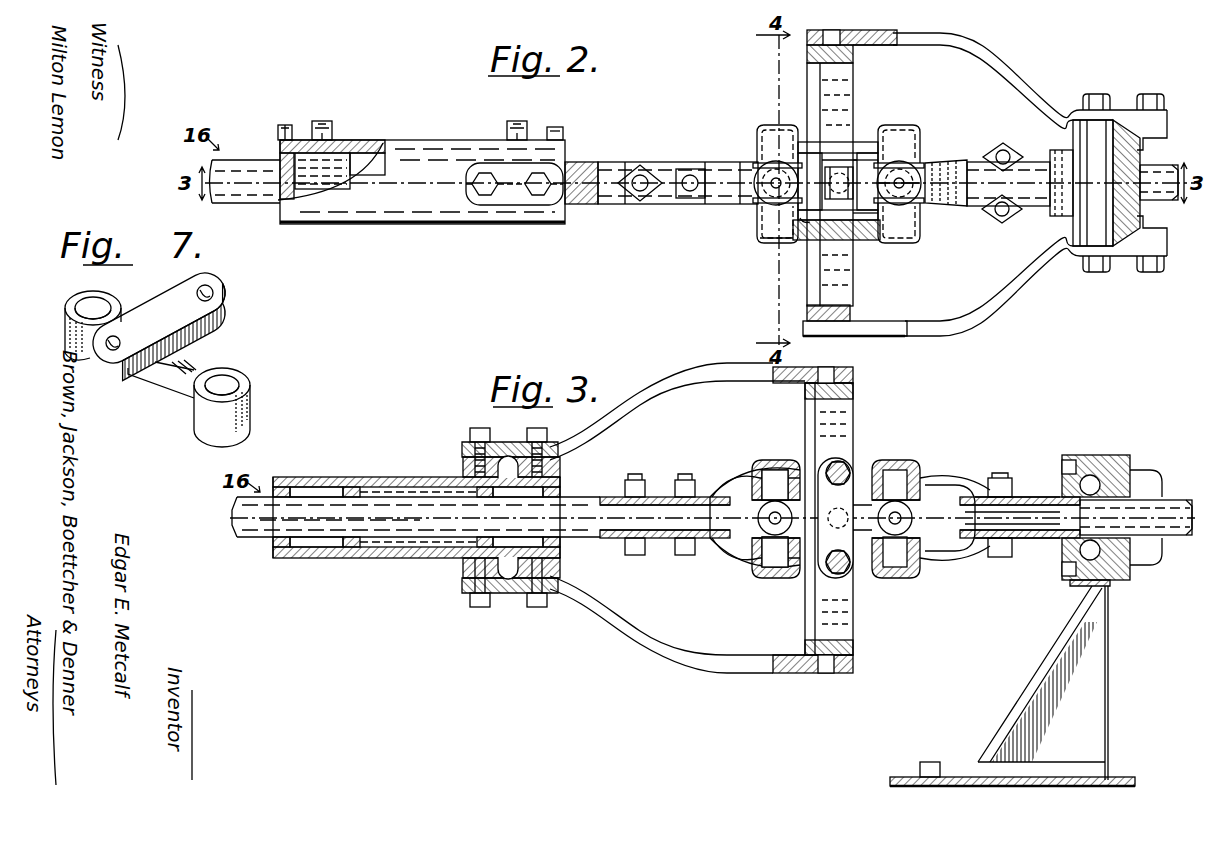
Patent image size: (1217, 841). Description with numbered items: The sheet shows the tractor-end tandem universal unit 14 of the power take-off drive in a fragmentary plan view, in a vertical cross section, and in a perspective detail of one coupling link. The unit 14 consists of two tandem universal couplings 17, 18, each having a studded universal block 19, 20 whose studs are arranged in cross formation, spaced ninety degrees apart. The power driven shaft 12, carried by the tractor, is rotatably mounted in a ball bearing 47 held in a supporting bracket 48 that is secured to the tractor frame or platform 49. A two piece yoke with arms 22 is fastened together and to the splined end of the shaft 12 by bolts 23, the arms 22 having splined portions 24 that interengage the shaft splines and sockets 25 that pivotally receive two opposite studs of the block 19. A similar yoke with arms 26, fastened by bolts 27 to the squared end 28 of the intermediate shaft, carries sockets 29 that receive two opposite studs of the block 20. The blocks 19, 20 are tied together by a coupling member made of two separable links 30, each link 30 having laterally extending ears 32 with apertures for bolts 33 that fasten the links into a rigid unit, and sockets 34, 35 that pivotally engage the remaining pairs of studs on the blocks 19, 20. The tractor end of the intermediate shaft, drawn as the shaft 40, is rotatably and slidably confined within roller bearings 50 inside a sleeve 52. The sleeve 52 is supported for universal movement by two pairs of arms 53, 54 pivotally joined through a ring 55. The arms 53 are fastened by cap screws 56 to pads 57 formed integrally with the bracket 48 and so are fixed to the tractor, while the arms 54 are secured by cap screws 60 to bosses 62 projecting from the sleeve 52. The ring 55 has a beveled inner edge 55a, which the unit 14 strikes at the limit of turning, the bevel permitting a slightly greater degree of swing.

In FIG. 2, the power driven shaft 12 is at (1158, 175).
In FIG. 3, the power driven shaft 12 is at (1155, 500).
In FIG. 2, the tandem universal unit 14 is at (866, 287).
In FIG. 3, the tandem universal unit 14 is at (866, 630).
In FIG. 2, the universal coupling 17 is at (924, 136).
In FIG. 3, the universal coupling 17 is at (922, 464).
In FIG. 2, the universal coupling 18 is at (755, 135).
In FIG. 3, the universal coupling 18 is at (758, 466).
In FIG. 2, the studded universal block 19 is at (906, 214).
In FIG. 3, the studded universal block 19 is at (945, 495).
In FIG. 2, the studded universal block 20 is at (803, 221).
In FIG. 3, the studded universal block 20 is at (760, 510).
In FIG. 2, the yoke arms 22 is at (957, 173).
In FIG. 3, the yoke arms 22 is at (963, 548).
In FIG. 2, the bolts 23 is at (1013, 160).
In FIG. 3, the bolts 23 is at (1005, 558).
In FIG. 3, the splined portions 24 is at (1013, 497).
In FIG. 2, the sockets 25 is at (905, 176).
In FIG. 3, the sockets 25 is at (900, 460).
In FIG. 2, the yoke arms 26 is at (722, 167).
In FIG. 3, the yoke arms 26 is at (722, 480).
In FIG. 2, the bolts 27 is at (647, 168).
In FIG. 3, the bolts 27 is at (660, 478).
In FIG. 2, the squared end 28 is at (682, 200).
In FIG. 3, the squared end 28 is at (680, 540).
In FIG. 2, the sockets 29 is at (758, 190).
In FIG. 3, the sockets 29 is at (780, 462).
In FIG. 2, the link 30 is at (851, 140).
In FIG. 3, the link 30 is at (866, 552).
In FIG. 7, the link 30 is at (166, 400).
In FIG. 2, the ears 32 is at (824, 196).
In FIG. 3, the ears 32 is at (840, 458).
In FIG. 7, the ears 32 is at (205, 270).
In FIG. 2, the bolts 33 is at (842, 140).
In FIG. 3, the bolts 33 is at (846, 468).
In FIG. 2, the socket 34 is at (890, 128).
In FIG. 7, the socket 34 is at (250, 397).
In FIG. 2, the socket 35 is at (760, 232).
In FIG. 7, the socket 35 is at (88, 296).
In FIG. 2, the shaft 40 is at (251, 204).
In FIG. 3, the shaft 40 is at (400, 532).
In FIG. 3, the ball bearing 47 is at (1100, 468).
In FIG. 2, the supporting bracket 48 is at (1113, 250).
In FIG. 3, the supporting bracket 48 is at (1100, 624).
In FIG. 3, the tractor frame or platform 49 is at (898, 776).
In FIG. 2, the roller bearings 50 is at (341, 154).
In FIG. 3, the roller bearings 50 is at (330, 550).
In FIG. 2, the sleeve 52 is at (385, 150).
In FIG. 3, the sleeve 52 is at (420, 478).
In FIG. 2, the arms 53 is at (1030, 92).
In FIG. 3, the arms 53 is at (990, 495).
In FIG. 2, the arms 54 is at (590, 166).
In FIG. 3, the arms 54 is at (655, 400).
In FIG. 2, the ring 55 is at (851, 315).
In FIG. 2, the inner edge of ring 55a is at (808, 50).
In FIG. 3, the inner edge of ring 55a is at (806, 647).
In FIG. 2, the cap screws 56 is at (1106, 96).
In FIG. 2, the pads 57 is at (1158, 137).
In FIG. 3, the pads 57 is at (1120, 578).
In FIG. 2, the cap screws 60 is at (536, 170).
In FIG. 3, the cap screws 60 is at (533, 442).
In FIG. 3, the bosses 62 is at (464, 462).